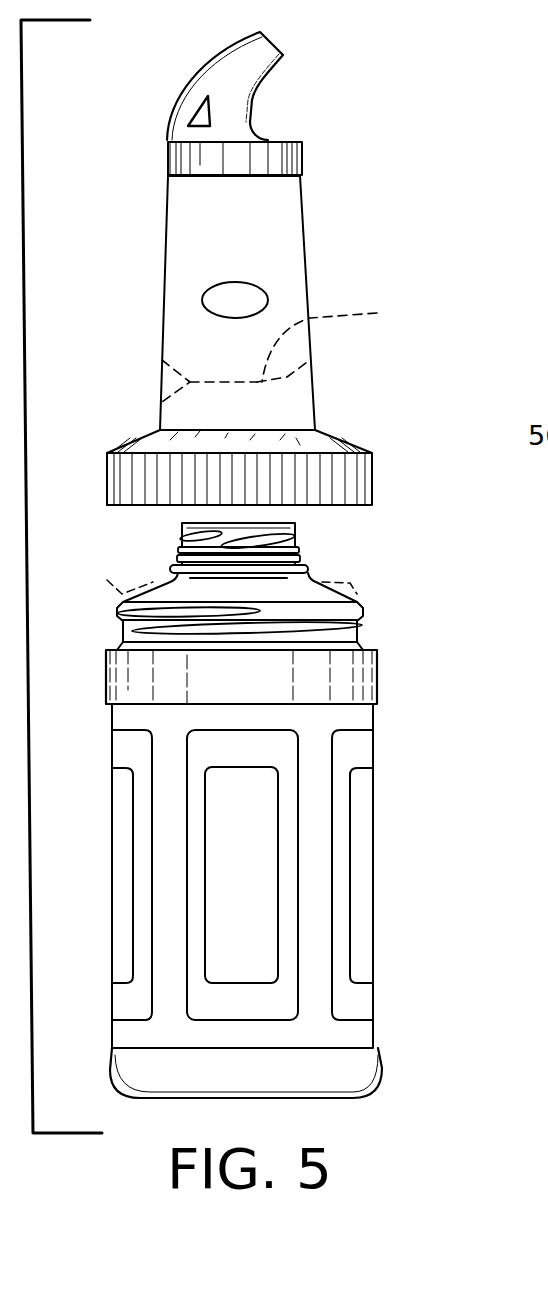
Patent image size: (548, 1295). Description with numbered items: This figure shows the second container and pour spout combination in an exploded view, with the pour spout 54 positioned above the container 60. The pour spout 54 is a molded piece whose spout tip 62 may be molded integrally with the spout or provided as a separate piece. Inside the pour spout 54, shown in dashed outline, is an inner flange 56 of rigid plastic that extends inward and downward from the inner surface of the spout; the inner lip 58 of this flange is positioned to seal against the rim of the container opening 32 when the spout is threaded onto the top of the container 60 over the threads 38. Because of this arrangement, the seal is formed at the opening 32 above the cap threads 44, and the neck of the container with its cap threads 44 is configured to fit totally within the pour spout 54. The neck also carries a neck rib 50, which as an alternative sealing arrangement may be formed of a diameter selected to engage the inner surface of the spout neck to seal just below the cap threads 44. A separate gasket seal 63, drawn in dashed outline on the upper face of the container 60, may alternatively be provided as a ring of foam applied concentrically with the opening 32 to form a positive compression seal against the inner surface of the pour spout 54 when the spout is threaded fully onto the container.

The spout tip 62 is at (252, 108).
The pour spout 54 is at (308, 235).
The inner flange 56 is at (335, 332).
The inner lip 58 is at (160, 402).
The container opening 32 is at (270, 523).
The cap threads 44 is at (298, 537).
The neck rib 50 is at (172, 570).
The gasket seal 63 is at (107, 580).
The threads 38 is at (363, 625).
The container 60 is at (378, 678).